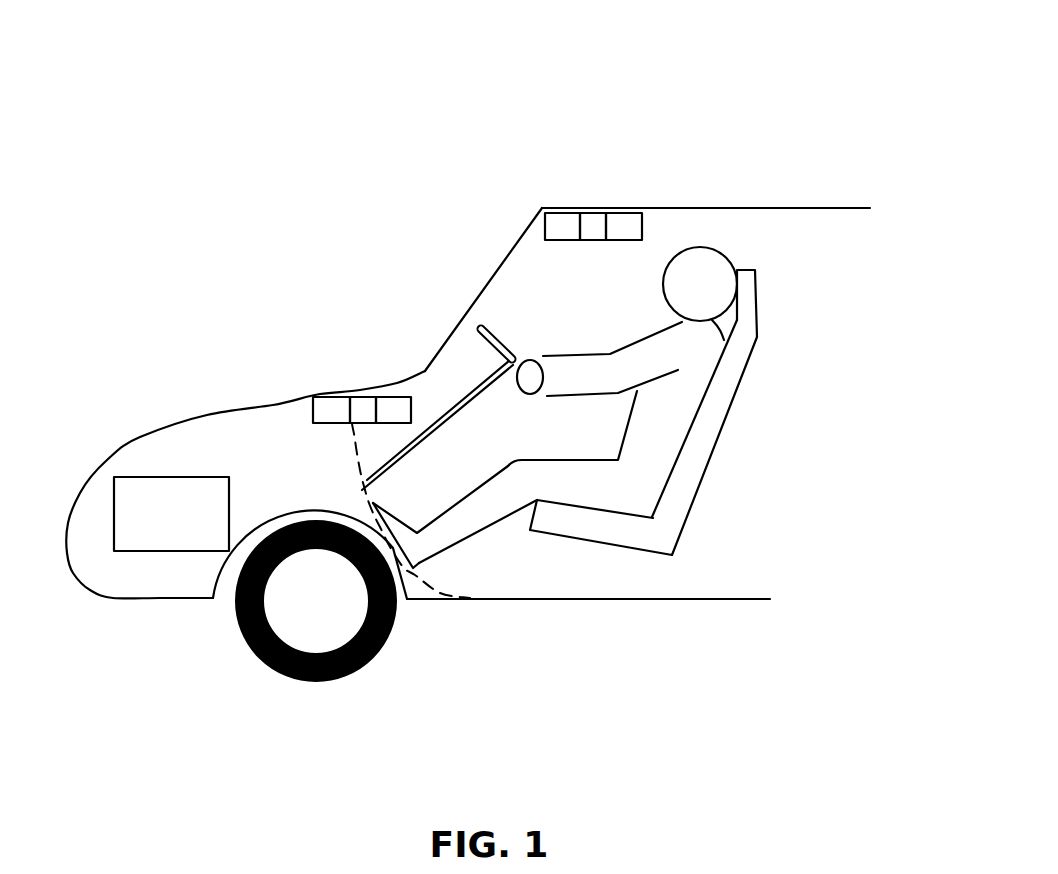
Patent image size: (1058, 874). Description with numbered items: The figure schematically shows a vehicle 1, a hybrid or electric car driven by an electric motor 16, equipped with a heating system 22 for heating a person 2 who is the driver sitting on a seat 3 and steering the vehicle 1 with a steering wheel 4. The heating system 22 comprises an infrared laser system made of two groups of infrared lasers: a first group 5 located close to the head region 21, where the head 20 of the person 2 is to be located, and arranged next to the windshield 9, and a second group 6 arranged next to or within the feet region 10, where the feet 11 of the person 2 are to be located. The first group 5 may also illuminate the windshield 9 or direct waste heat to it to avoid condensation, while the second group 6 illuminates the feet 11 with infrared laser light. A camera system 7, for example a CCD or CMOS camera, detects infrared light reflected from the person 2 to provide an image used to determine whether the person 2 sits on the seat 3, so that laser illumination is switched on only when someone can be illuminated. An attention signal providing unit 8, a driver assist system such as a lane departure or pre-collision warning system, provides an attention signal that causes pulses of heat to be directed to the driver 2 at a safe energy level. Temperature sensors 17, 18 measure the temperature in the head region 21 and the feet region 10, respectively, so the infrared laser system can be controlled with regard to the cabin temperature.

The vehicle 1 is at (818, 140).
The person 2 is at (660, 458).
The seat 3 is at (730, 410).
The steering wheel 4 is at (454, 416).
The first group of infrared lasers 5 is at (560, 212).
The second group of infrared lasers 6 is at (403, 396).
The camera system 7 is at (627, 212).
The attention signal providing unit 8 is at (322, 396).
The windshield 9 is at (480, 272).
The feet region 10 is at (476, 555).
The feet 11 is at (426, 575).
The electric motor 16 is at (150, 551).
The temperature sensor 17 is at (583, 212).
The temperature sensor 18 is at (360, 396).
The head 20 is at (746, 238).
The head region 21 is at (618, 266).
The heating system 22 is at (357, 218).